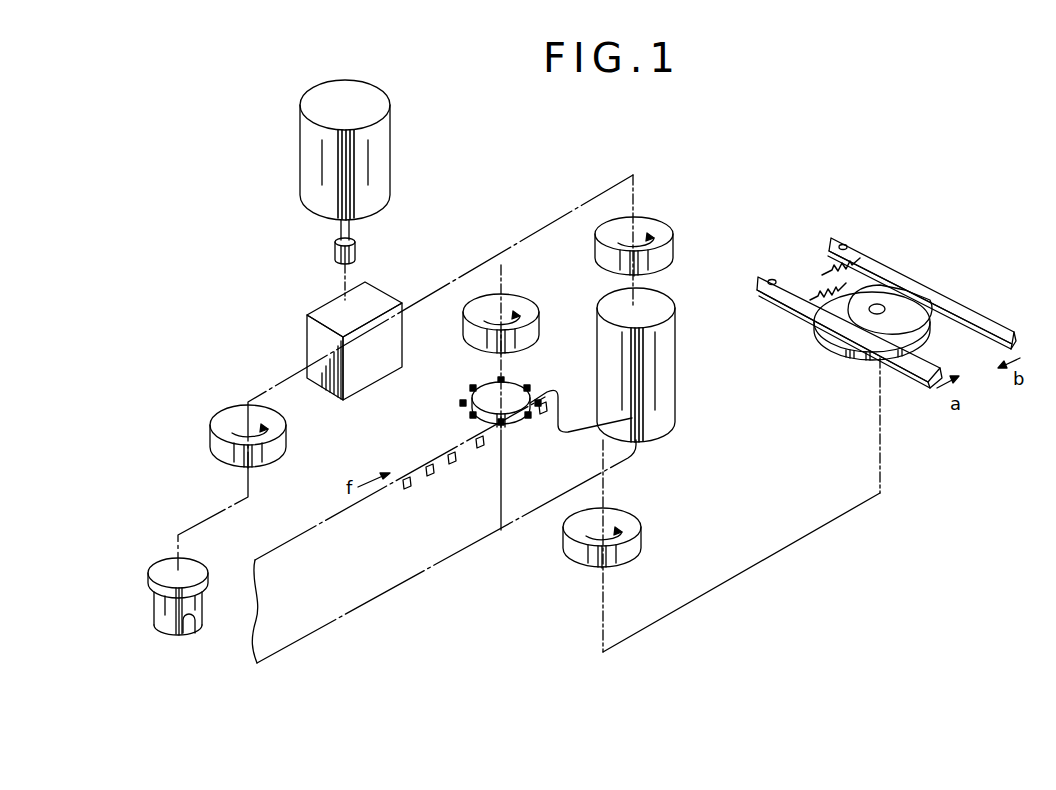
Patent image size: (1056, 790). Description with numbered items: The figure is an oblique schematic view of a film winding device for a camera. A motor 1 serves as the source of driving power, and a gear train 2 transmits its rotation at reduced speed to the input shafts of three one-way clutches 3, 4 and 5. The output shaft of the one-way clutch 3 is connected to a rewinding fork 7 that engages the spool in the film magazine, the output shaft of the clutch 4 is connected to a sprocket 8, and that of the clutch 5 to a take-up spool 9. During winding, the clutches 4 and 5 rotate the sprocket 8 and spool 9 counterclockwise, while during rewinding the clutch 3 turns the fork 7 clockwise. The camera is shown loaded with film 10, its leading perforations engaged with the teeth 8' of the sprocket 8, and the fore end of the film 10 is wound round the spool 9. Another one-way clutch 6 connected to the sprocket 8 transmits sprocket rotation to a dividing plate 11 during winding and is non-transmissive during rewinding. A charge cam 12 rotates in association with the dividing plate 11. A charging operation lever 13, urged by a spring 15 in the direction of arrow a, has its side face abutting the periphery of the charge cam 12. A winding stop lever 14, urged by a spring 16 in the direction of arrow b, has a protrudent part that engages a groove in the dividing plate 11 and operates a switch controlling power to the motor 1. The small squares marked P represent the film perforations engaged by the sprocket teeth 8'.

The motor 1 is at (372, 93).
The gear train 2 is at (382, 293).
The one-way clutch 3 is at (277, 422).
The one-way clutch 4 is at (473, 340).
The one-way clutch 5 is at (665, 232).
The one-way clutch 6 is at (630, 522).
The rewinding fork 7 is at (193, 566).
The sprocket 8 is at (496, 388).
The teeth of the sprocket 8' is at (512, 386).
The take-up spool 9 is at (668, 345).
The film 10 is at (430, 555).
The dividing plate 11 is at (930, 318).
The charge cam 12 is at (890, 302).
The charging operation lever 13 is at (918, 370).
The winding stop lever 14 is at (1003, 327).
The spring 15 is at (817, 293).
The spring 16 is at (857, 257).
The workpieces P is at (452, 446).